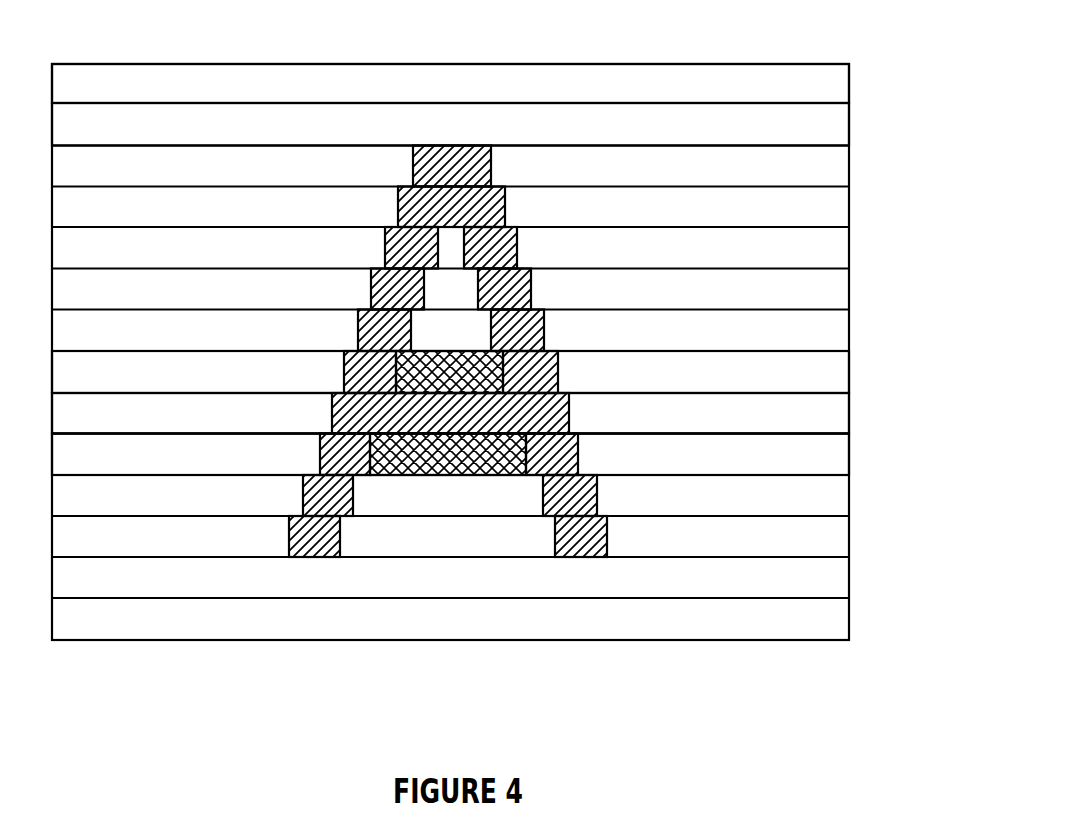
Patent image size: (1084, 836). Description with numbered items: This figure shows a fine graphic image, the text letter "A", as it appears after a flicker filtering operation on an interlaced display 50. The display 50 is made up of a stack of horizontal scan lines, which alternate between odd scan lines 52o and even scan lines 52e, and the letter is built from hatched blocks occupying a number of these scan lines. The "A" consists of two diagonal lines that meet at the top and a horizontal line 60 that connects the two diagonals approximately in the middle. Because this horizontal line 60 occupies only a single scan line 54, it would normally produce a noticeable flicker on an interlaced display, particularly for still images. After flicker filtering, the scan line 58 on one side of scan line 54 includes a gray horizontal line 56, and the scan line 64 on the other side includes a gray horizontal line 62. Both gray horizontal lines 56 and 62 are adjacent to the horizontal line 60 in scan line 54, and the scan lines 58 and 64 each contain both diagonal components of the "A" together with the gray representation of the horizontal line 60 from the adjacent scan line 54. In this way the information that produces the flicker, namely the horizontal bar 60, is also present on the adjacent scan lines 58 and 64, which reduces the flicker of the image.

The display 50 is at (493, 63).
The odd scan lines 52o is at (849, 87).
The even scan lines 52e is at (849, 133).
The scan line 54 is at (849, 413).
The gray horizontal line 56 is at (477, 473).
The scan line 58 is at (849, 457).
The horizontal line 60 is at (587, 393).
The gray horizontal line 62 is at (547, 343).
The scan line 64 is at (849, 373).